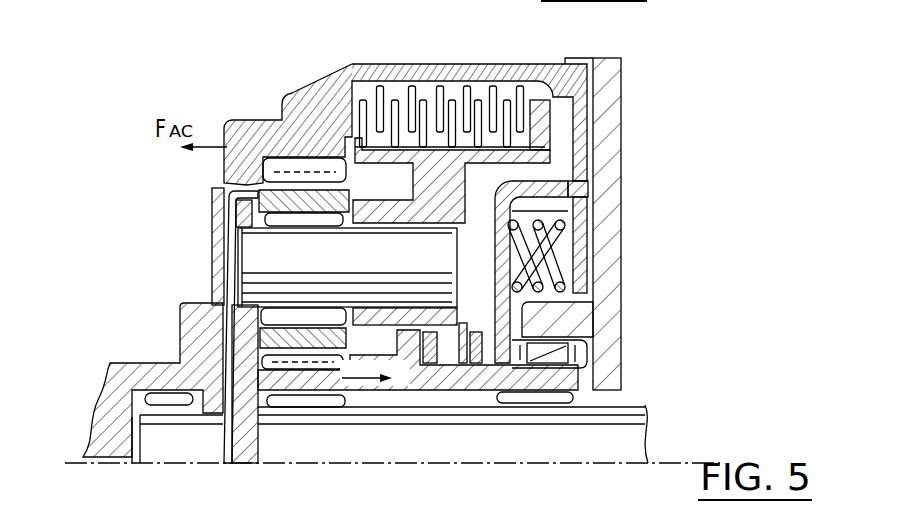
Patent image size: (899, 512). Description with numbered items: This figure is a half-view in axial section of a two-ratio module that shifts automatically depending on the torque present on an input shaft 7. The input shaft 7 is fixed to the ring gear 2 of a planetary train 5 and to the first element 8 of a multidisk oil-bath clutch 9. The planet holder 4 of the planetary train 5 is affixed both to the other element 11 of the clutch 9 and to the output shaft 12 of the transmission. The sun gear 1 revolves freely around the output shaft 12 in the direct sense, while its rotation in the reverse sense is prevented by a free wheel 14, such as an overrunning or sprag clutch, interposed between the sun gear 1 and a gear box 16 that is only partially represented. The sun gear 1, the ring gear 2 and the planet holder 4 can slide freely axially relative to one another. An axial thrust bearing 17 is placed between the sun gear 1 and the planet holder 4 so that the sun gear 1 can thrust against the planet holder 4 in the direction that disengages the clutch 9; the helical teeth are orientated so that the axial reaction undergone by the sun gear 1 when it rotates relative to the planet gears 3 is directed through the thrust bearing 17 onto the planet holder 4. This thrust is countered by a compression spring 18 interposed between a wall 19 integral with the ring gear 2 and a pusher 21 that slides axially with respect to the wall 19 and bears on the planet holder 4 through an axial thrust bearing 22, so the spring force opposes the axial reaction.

The sun gear 1 is at (317, 382).
The ring gear 2 is at (291, 152).
The planet gears 3 is at (213, 188).
The planet holder 4 is at (613, 200).
The planetary train 5 is at (290, 82).
The input shaft 7 is at (132, 367).
The first element of the clutch 8 is at (420, 63).
The clutch 9 is at (561, 122).
The other element of the clutch 11 is at (465, 163).
The output shaft 12 is at (620, 433).
The free wheel 14 is at (575, 362).
The gear box 16 is at (612, 243).
The axial thrust bearing 17 is at (430, 366).
The compression spring 18 is at (567, 268).
The wall 19 is at (585, 232).
The pusher 21 is at (500, 267).
The axial thrust bearing 22 is at (476, 366).